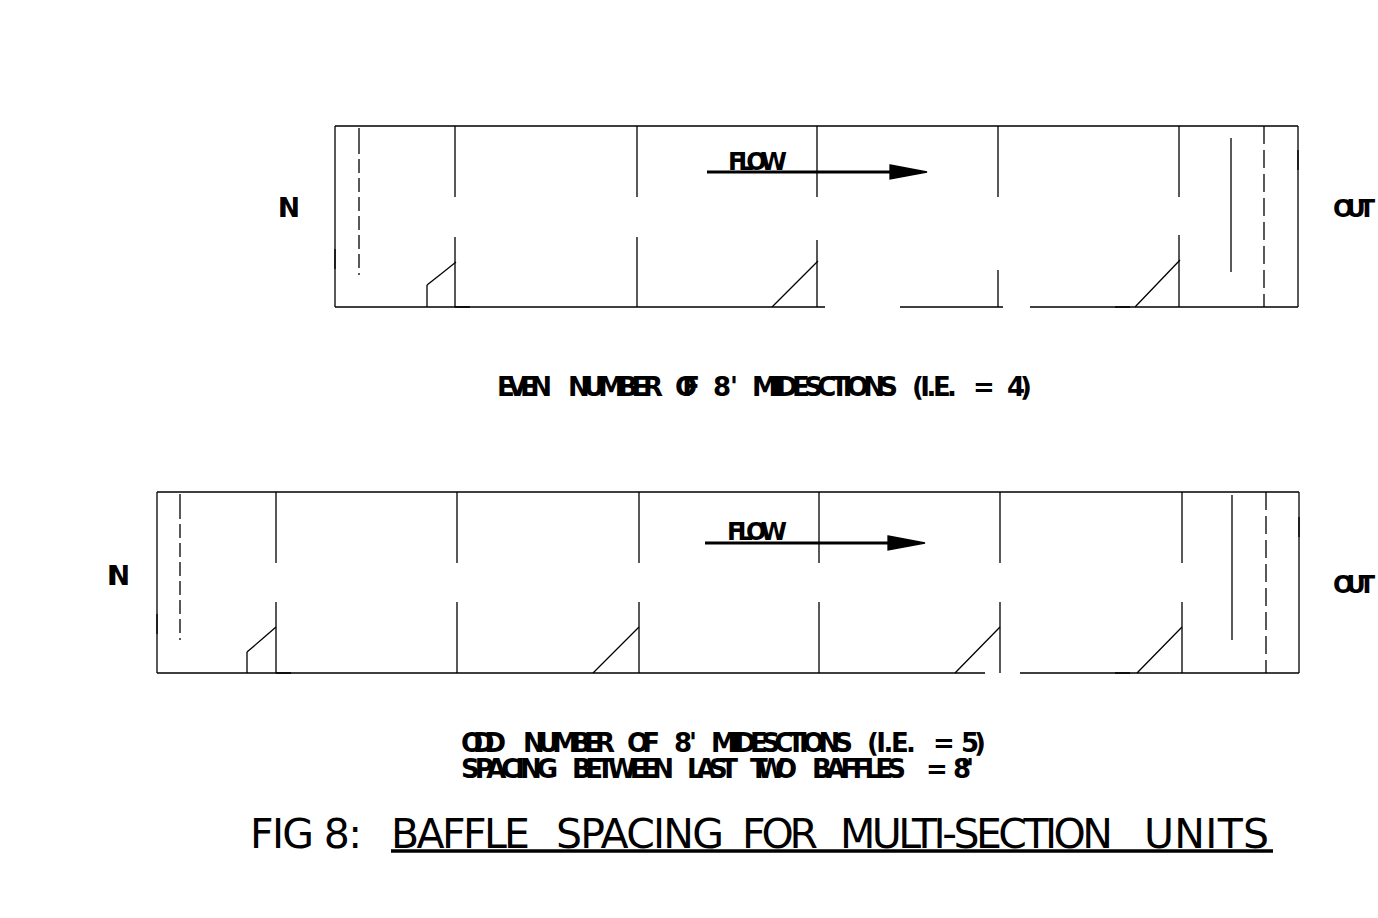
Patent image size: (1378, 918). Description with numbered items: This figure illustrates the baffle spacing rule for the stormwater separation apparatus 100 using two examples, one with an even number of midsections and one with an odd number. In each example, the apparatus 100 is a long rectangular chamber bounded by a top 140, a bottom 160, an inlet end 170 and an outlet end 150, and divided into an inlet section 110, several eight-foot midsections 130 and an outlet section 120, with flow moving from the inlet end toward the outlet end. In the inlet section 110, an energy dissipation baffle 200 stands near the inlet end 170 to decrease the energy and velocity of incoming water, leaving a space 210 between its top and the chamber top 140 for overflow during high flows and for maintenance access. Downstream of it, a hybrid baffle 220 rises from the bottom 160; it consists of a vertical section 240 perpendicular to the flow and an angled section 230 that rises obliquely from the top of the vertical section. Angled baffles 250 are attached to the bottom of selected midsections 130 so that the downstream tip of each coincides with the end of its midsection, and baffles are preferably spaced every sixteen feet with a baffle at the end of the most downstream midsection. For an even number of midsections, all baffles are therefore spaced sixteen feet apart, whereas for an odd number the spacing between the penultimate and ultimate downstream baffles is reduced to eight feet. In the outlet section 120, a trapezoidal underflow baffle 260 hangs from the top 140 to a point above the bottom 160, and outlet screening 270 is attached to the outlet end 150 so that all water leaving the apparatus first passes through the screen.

The apparatus 100 is at (872, 60).
The inlet section 110 is at (378, 113).
The outlet section 120 is at (1253, 112).
The midsection 130 is at (1088, 111).
The top 140 is at (478, 126).
The outlet end 150 is at (1298, 160).
The bottom 160 is at (463, 319).
The inlet end 170 is at (335, 259).
The energy dissipation baffle 200 is at (359, 185).
The space 210 is at (359, 132).
The hybrid baffle 220 is at (423, 278).
The angled section 230 is at (437, 280).
The vertical section 240 is at (427, 297).
The angled baffle 250 is at (795, 285).
The trapezoidal underflow baffle 260 is at (1230, 176).
The outlet screening 270 is at (1265, 279).